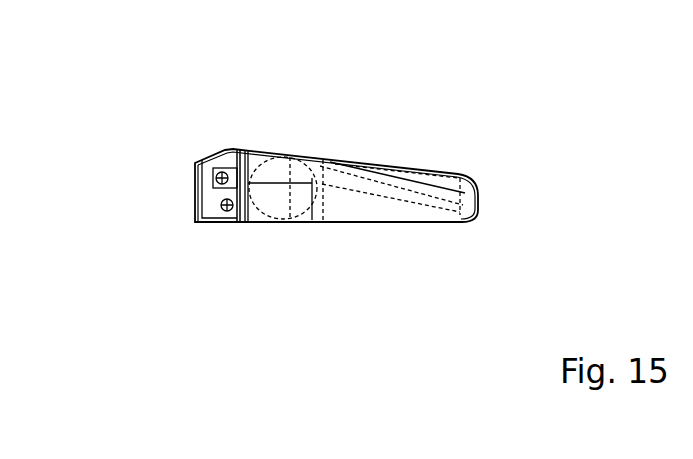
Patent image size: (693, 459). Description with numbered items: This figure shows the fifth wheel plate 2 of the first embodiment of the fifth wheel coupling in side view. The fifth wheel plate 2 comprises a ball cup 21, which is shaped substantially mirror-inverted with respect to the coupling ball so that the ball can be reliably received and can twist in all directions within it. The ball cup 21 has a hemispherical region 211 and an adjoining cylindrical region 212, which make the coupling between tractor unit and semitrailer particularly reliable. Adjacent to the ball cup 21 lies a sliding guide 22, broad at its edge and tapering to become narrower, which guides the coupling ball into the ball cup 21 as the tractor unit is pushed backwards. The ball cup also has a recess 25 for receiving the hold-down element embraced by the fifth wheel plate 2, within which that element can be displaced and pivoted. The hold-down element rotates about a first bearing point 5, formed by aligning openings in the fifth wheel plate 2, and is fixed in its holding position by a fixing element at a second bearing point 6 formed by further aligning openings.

The fifth wheel plate 2 is at (183, 75).
The first bearing point 5 is at (222, 207).
The second bearing point 6 is at (213, 178).
The ball cup 21 is at (273, 192).
The sliding guide 22 is at (383, 189).
The recess 25 is at (240, 177).
The hemispherical region 211 is at (278, 202).
The cylindrical region 212 is at (263, 172).